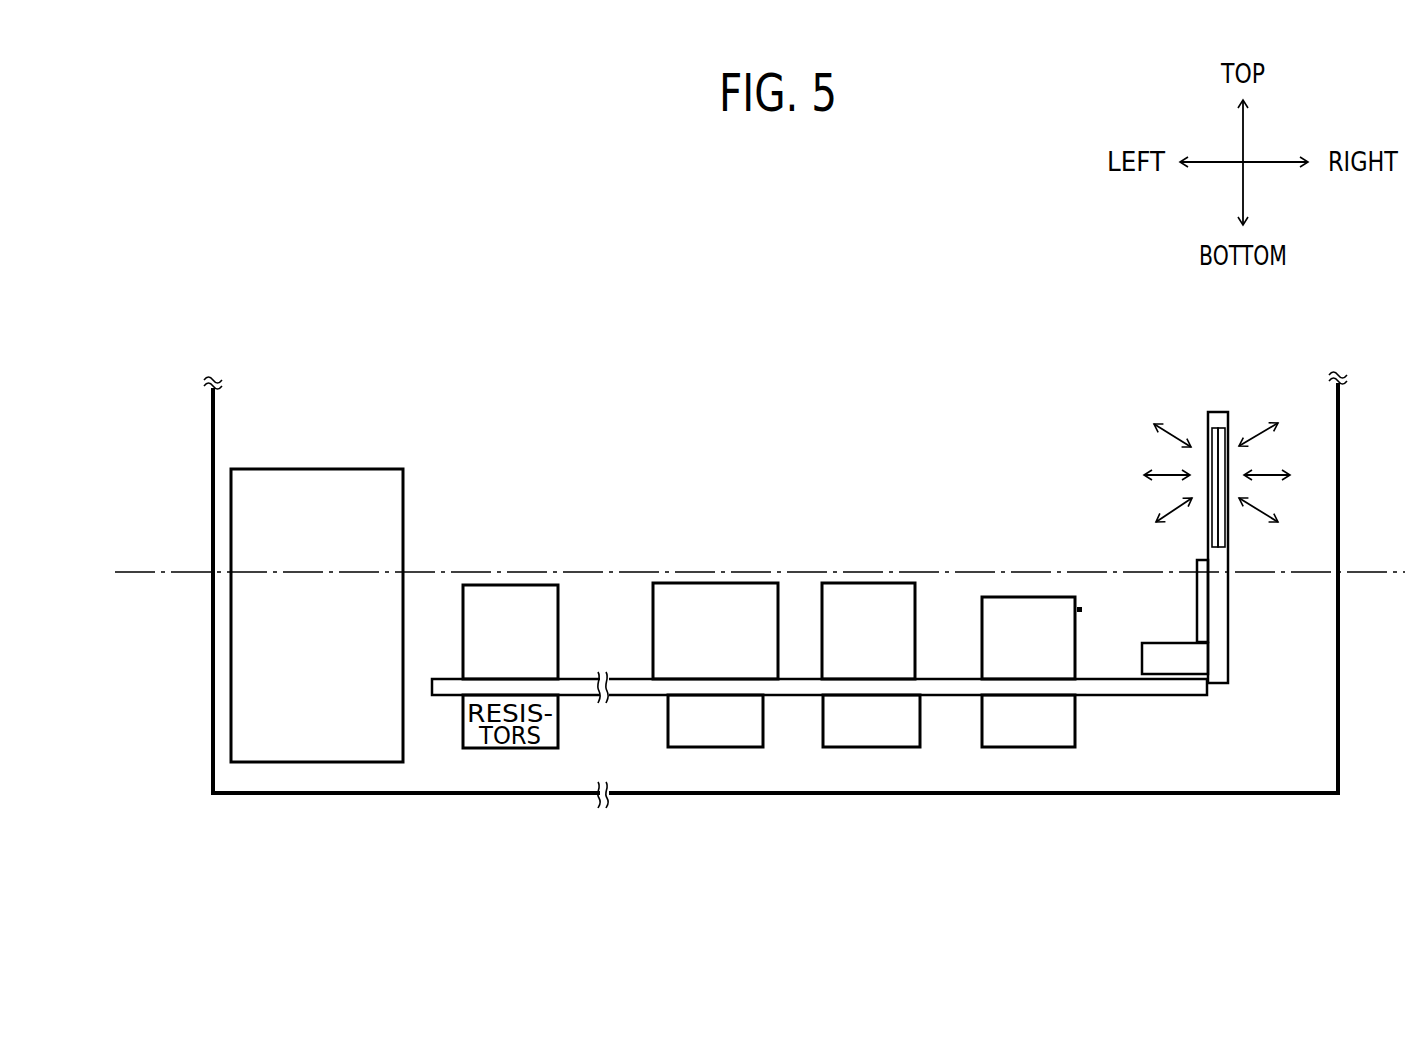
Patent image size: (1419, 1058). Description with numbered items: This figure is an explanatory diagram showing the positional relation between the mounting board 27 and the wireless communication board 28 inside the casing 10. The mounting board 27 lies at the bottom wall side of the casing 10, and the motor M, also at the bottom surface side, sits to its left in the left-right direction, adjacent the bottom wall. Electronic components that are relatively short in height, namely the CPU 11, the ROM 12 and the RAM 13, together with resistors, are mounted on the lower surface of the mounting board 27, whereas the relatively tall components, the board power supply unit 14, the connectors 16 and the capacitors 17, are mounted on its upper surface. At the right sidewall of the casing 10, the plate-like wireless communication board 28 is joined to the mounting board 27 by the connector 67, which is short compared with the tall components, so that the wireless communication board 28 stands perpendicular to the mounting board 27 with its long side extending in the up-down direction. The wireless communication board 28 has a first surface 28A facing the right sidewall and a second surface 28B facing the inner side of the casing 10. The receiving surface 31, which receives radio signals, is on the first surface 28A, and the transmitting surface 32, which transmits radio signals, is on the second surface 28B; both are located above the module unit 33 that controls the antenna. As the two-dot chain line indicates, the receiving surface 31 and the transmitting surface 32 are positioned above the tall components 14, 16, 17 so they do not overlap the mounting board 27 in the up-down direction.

The casing 10 is at (212, 615).
The motor M is at (300, 762).
The mounting board 27 is at (1133, 696).
The capacitors 17 is at (517, 583).
The connectors 16 is at (705, 583).
The board power supply unit 14 is at (1005, 597).
The RAM 13 is at (722, 750).
The central processing unit (CPU) 11 is at (875, 750).
The ROM 12 is at (1030, 750).
The wireless communication board 28 is at (1210, 570).
The first surface 28A is at (1231, 420).
The second surface 28B is at (1204, 420).
The receiving surface 31 is at (1223, 517).
The transmitting surface 32 is at (1212, 518).
The module unit 33 is at (1202, 605).
The connector 67 is at (1173, 655).